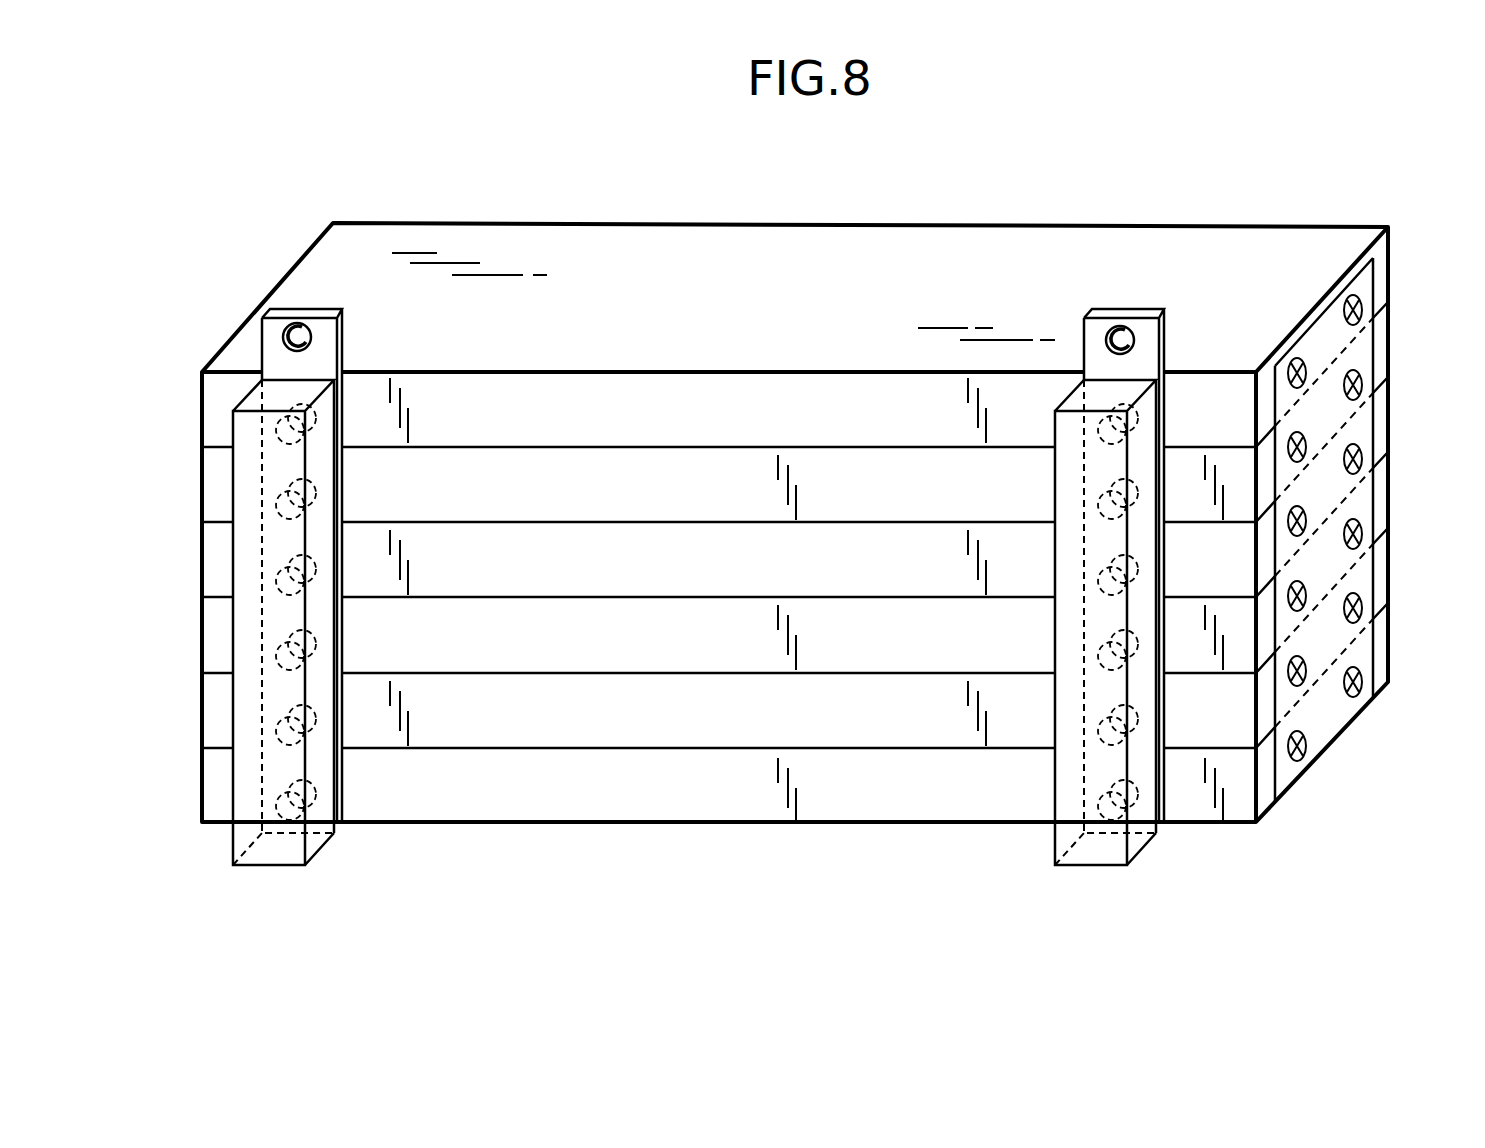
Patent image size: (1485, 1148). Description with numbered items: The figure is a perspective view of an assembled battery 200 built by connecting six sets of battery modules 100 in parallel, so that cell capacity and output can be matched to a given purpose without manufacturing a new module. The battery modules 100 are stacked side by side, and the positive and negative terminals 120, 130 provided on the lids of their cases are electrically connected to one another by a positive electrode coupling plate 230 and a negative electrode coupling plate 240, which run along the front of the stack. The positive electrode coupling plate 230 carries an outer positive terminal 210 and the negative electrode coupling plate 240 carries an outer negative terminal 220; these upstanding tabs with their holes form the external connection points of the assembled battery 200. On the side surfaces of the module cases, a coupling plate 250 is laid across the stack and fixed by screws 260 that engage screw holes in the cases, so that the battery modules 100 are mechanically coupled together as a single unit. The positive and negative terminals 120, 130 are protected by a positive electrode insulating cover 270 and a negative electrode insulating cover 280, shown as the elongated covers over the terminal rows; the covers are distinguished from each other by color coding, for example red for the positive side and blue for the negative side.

The battery module 100 is at (211, 551).
The positive terminal 120 is at (306, 787).
The negative terminal 130 is at (1141, 791).
The assembled battery 200 is at (268, 242).
The outer positive terminal 210 is at (299, 324).
The outer negative terminal 220 is at (1121, 327).
The positive electrode coupling plate 230 is at (364, 332).
The negative electrode coupling plate 240 is at (1182, 334).
The coupling plate 250 is at (1373, 413).
The screw 260 is at (1362, 305).
The positive electrode insulating cover 270 is at (272, 855).
The negative electrode insulating cover 280 is at (1096, 849).